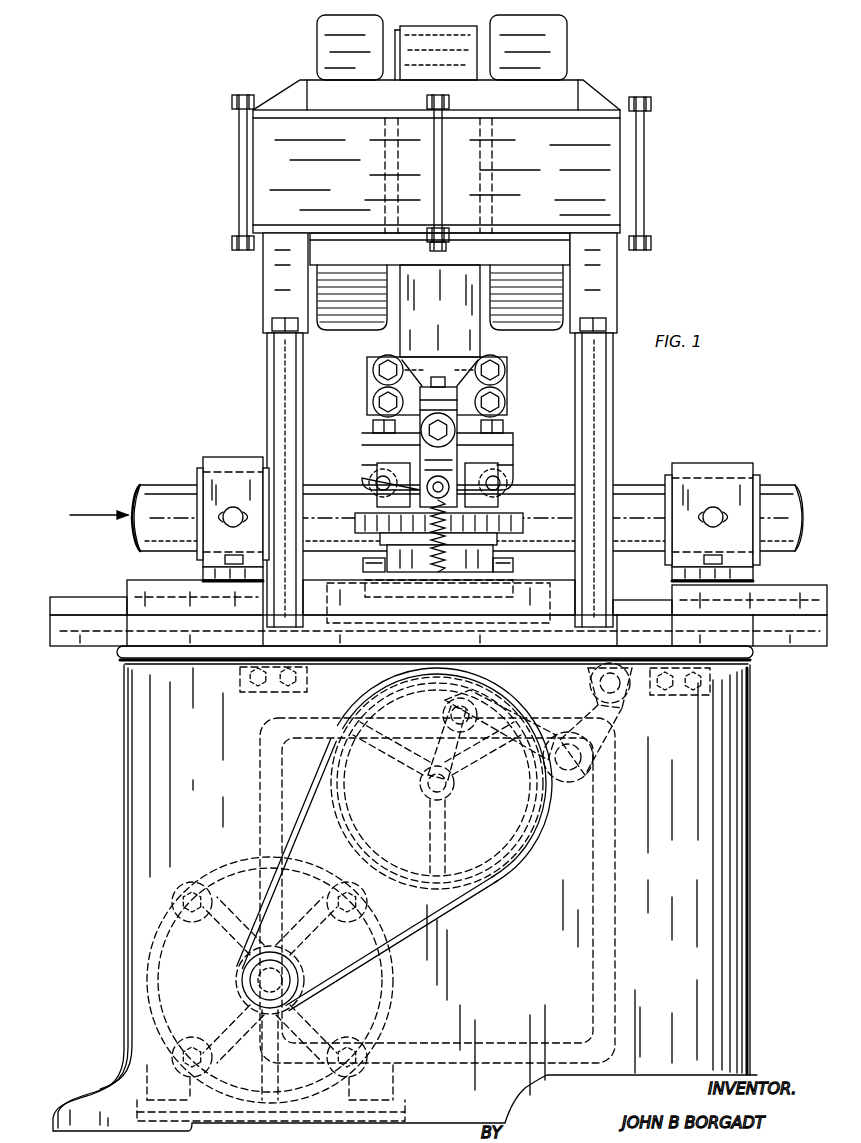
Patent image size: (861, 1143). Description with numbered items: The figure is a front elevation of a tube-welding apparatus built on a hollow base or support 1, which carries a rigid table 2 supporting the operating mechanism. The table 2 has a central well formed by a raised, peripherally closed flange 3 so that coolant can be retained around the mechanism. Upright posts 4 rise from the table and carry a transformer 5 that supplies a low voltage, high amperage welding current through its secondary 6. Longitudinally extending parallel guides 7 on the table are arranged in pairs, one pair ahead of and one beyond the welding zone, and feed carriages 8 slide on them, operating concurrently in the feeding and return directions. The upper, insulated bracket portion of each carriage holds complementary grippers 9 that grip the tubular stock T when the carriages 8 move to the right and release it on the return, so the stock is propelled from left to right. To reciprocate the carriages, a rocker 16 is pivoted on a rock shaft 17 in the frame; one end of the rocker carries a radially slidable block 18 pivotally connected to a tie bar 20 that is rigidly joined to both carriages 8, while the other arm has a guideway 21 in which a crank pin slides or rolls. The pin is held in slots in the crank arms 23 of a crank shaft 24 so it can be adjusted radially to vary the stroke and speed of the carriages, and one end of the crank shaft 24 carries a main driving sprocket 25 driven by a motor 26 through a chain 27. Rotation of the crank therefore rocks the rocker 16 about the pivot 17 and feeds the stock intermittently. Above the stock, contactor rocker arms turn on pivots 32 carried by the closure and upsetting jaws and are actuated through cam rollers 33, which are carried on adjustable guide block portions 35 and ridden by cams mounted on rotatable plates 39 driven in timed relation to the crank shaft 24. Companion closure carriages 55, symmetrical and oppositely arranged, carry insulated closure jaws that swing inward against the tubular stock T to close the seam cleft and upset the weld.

The hollow base 1 is at (752, 791).
The table 2 is at (758, 653).
The raised peripherally closed flange 3 is at (565, 584).
The upright posts 4 is at (268, 388).
The transformer 5 is at (623, 222).
The secondary 6 is at (437, 341).
The guides 7 is at (88, 605).
The feed carriages 8 is at (152, 588).
The grippers 9 is at (198, 472).
The rocker 16 is at (612, 742).
The rock shaft 17 is at (569, 782).
The radially slidable block 18 is at (619, 703).
The tie bar 20 is at (326, 698).
The guideway 21 is at (478, 728).
The crank arms 23 is at (468, 770).
The crank shaft 24 is at (458, 784).
The main driving sprocket 25 is at (525, 842).
The motor 26 is at (230, 867).
The chain 27 is at (318, 791).
The pivots 32 is at (374, 482).
The cam rollers 33 is at (504, 478).
The guide block portions 35 is at (470, 413).
The rotatable plates 39 is at (356, 520).
The closure carriages 55 is at (513, 564).
The tubular stock T is at (158, 488).